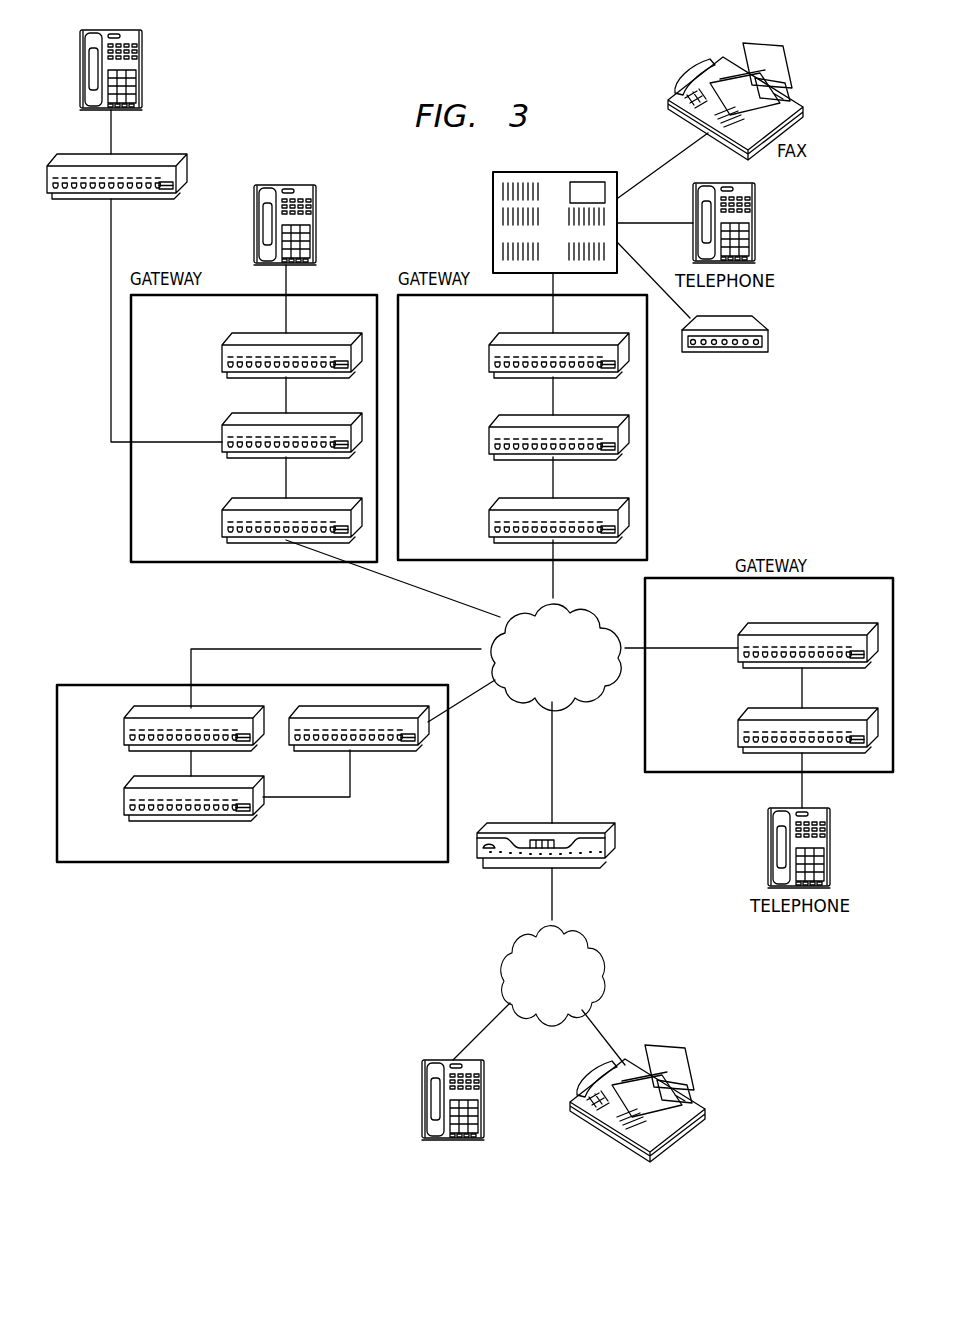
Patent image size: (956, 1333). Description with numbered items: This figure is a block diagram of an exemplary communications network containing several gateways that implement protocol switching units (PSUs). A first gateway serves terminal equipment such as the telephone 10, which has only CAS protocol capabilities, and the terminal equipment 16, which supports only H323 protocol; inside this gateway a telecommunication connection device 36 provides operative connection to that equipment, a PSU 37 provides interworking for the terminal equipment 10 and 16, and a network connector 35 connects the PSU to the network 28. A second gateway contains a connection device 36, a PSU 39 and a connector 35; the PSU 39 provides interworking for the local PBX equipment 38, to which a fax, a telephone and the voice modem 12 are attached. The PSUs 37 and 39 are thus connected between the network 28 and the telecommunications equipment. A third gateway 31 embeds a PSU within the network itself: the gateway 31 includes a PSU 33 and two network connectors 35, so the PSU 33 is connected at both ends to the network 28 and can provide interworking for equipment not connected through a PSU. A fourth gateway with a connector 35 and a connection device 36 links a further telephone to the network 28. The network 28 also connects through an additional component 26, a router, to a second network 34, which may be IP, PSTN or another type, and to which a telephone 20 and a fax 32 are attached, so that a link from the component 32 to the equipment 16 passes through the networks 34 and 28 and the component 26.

The telephone 10 is at (254, 226).
The voice modem 12 is at (768, 338).
The telecommunication terminal equipment 16 is at (142, 72).
The telephone 20 is at (422, 1100).
The additional component 26 is at (608, 838).
The network 28 is at (565, 661).
The gateway 31 is at (252, 813).
The component 32 is at (680, 1140).
The PSU 33 is at (124, 800).
The network 34 is at (563, 982).
The network connector 35 is at (222, 522).
The telecommunication connection device 36 is at (86, 200).
The PSU 37 is at (222, 427).
The local PBX equipment 38 is at (493, 223).
The PSU 39 is at (489, 437).